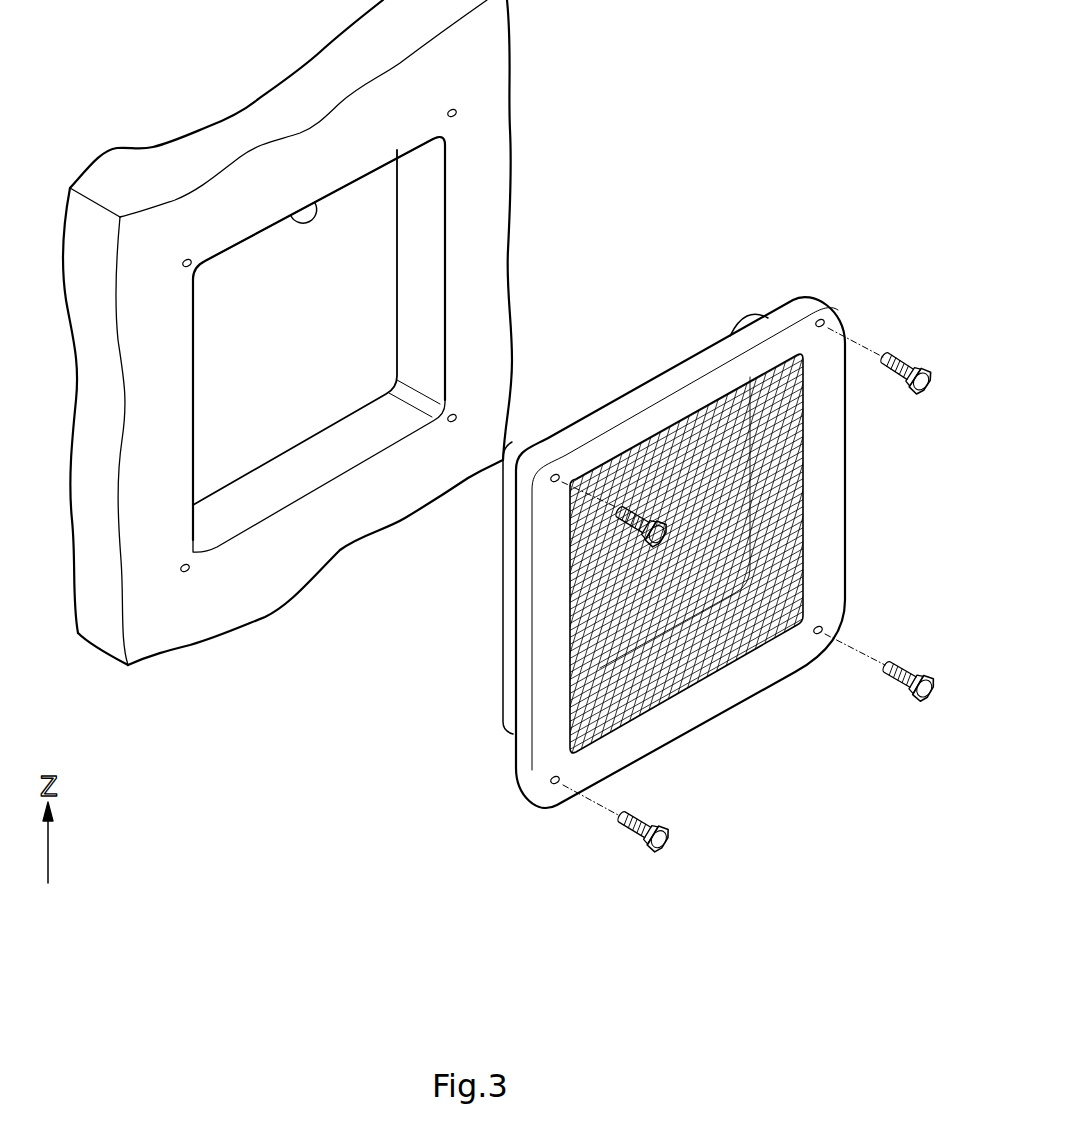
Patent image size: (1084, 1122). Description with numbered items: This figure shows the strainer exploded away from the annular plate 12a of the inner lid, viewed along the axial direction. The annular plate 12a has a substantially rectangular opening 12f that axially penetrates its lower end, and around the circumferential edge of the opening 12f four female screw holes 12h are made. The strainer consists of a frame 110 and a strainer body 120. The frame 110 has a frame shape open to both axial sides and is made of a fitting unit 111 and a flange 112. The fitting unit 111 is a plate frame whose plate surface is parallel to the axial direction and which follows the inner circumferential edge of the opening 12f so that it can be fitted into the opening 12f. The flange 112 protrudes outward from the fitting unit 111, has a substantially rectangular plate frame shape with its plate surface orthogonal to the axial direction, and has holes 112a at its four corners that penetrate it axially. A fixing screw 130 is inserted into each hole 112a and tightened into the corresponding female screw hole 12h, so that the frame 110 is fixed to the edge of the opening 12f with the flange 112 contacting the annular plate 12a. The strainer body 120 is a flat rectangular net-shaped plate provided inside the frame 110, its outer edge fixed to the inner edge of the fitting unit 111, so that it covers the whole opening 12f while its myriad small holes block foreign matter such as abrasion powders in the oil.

The annular plate 12a is at (243, 200).
The opening 12f is at (316, 205).
The female screw hole 12h is at (190, 258).
The frame 110 is at (875, 196).
The fitting unit 111 is at (735, 318).
The flange 112 is at (836, 320).
The hole 112a is at (826, 324).
The strainer body 120 is at (792, 580).
The fixing screw 130 is at (927, 395).